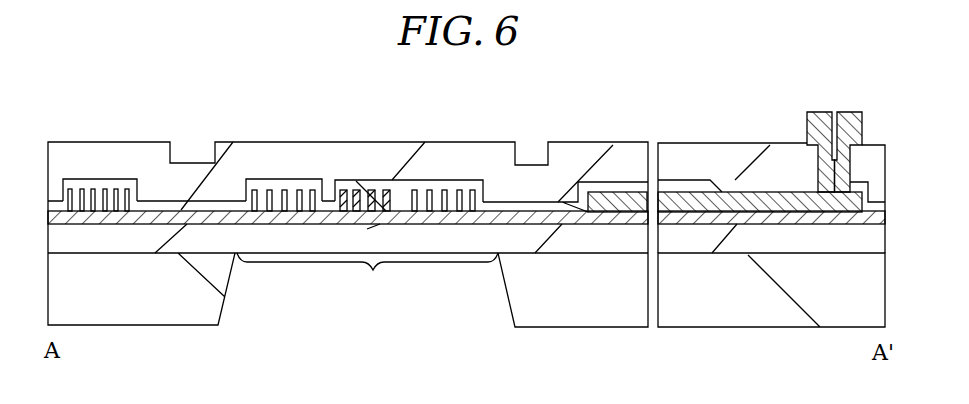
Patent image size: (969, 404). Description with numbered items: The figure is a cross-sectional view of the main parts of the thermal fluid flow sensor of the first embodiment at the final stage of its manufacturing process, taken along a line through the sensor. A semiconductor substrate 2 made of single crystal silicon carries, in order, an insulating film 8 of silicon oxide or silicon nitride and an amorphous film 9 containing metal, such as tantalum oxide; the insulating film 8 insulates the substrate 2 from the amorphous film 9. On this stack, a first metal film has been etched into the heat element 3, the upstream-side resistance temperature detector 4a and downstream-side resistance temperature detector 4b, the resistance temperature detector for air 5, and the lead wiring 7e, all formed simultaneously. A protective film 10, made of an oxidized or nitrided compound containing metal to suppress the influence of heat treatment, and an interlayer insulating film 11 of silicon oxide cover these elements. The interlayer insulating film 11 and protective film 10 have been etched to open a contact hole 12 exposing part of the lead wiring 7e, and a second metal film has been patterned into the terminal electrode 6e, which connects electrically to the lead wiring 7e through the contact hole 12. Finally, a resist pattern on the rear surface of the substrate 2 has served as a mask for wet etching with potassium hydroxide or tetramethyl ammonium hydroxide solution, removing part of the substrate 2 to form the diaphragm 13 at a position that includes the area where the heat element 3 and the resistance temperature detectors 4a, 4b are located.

The semiconductor substrate 2 is at (164, 327).
The heat element 3 is at (385, 176).
The upstream-side resistance temperature detector 4a is at (316, 176).
The downstream-side resistance temperature detector 4b is at (475, 176).
The resistance temperature detector for air 5 is at (130, 175).
The terminal electrode 6e is at (850, 112).
The lead wiring 7e is at (603, 192).
The insulating film 8 is at (498, 230).
The amorphous film containing metal 9 is at (525, 212).
The protective film 10 is at (197, 200).
The interlayer insulating film 11 is at (253, 142).
The contact hole 12 is at (823, 140).
The diaphragm 13 is at (373, 272).